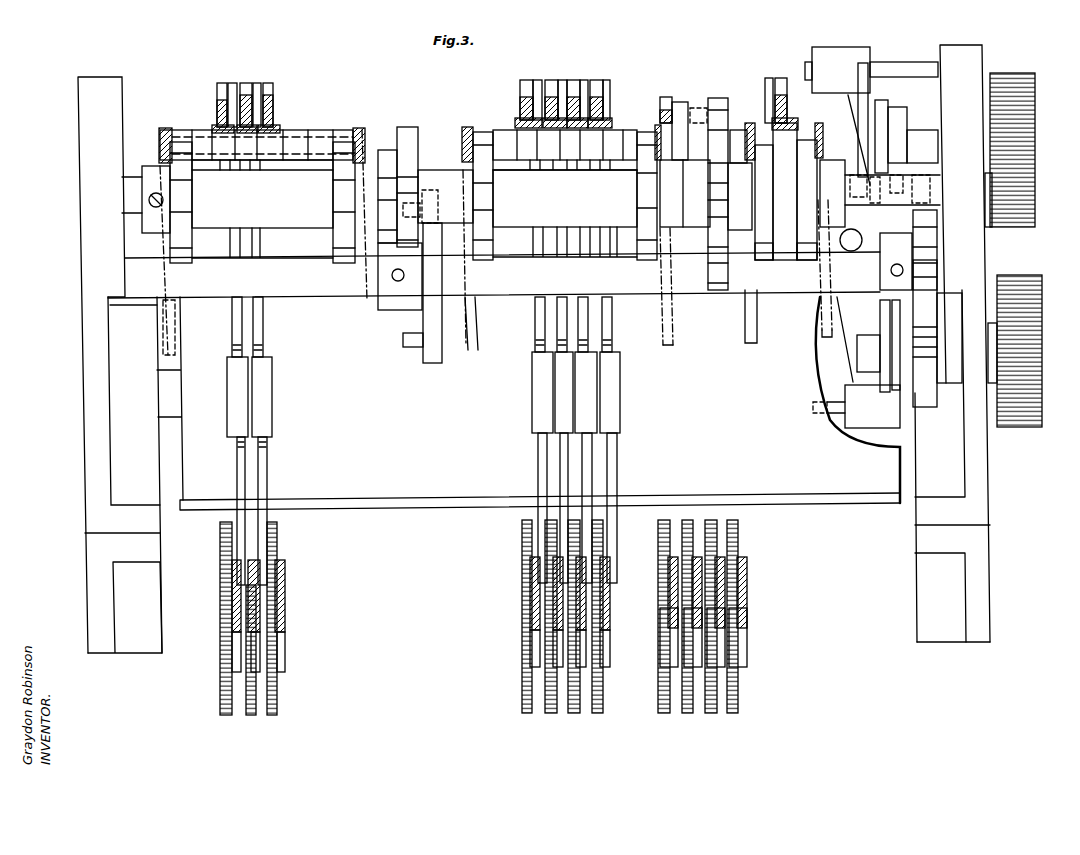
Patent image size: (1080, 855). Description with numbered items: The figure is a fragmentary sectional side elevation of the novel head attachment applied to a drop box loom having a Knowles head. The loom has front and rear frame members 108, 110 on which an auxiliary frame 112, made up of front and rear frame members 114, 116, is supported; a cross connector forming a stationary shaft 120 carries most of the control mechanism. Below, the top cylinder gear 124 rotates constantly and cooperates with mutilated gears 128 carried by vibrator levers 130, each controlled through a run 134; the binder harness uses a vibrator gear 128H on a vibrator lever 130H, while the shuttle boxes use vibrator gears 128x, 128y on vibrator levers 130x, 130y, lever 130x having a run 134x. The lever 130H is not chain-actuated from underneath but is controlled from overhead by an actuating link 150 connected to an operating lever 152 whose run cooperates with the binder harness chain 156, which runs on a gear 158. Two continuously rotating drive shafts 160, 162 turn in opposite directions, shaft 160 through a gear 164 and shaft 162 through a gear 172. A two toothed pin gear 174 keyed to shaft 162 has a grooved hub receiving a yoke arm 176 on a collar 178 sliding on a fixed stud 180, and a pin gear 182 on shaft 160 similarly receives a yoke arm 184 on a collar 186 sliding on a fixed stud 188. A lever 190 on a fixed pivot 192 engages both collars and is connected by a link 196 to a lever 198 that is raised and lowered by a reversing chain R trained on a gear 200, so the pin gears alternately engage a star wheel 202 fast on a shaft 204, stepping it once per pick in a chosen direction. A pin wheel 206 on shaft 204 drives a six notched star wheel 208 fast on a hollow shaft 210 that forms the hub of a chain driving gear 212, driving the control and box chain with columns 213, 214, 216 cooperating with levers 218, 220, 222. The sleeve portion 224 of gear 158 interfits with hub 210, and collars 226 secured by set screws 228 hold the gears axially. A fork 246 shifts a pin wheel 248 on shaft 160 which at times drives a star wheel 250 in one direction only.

The front frame member 108 is at (983, 593).
The rear frame member 110 is at (88, 554).
The auxiliary frame 112 is at (70, 240).
The front frame member 114 is at (982, 483).
The rear frame member 116 is at (88, 373).
The stationary shaft 120 is at (135, 201).
The top cylinder gear 124 is at (381, 490).
The mutilated gear 128 is at (715, 695).
The vibrator gear 128H is at (548, 680).
The vibrator gear 128x is at (278, 698).
The vibrator gear 128y is at (252, 712).
The vibrator lever 130 is at (740, 580).
The vibrator lever 130H is at (556, 580).
The vibrator lever 130x is at (285, 598).
The vibrator lever 130y is at (232, 592).
The run 134 is at (732, 635).
The run 134x is at (283, 648).
The actuating link 150 is at (260, 465).
The operating lever 152 is at (596, 80).
The binder harness chain 156 is at (460, 133).
The gear 158 is at (500, 242).
The drive shaft 160 is at (918, 140).
The drive shaft 162 is at (858, 355).
The gear 164 is at (1030, 153).
The gear 172 is at (1035, 327).
The pin gear 174 is at (912, 395).
The yoke arm 176 is at (890, 402).
The collar 178 is at (880, 428).
The fixed stud 180 is at (820, 413).
The pin gear 182 is at (882, 102).
The yoke arm 184 is at (860, 88).
The collar 186 is at (826, 47).
The fixed stud 188 is at (897, 62).
The lever 190 is at (840, 316).
The fixed pivot 192 is at (851, 248).
The link 196 is at (765, 90).
The lever 198 is at (780, 77).
The gear 200 is at (805, 258).
The star wheel 202 is at (925, 290).
The shaft 204 is at (483, 290).
The pin wheel 206 is at (432, 364).
The star wheel 208 is at (408, 127).
The hollow shaft 210 is at (435, 172).
The chain driving gear 212 is at (182, 262).
The column 213 is at (225, 172).
The column 214 is at (243, 172).
The column 216 is at (270, 172).
The lever 218 is at (215, 110).
The lever 220 is at (246, 92).
The lever 222 is at (273, 98).
The sleeve portion 224 is at (483, 193).
The collars 226 is at (142, 177).
The set screws 228 is at (156, 210).
The fork 246 is at (664, 95).
The pin wheel 248 is at (680, 102).
The star wheel 250 is at (718, 97).
The reversing chain R is at (737, 328).